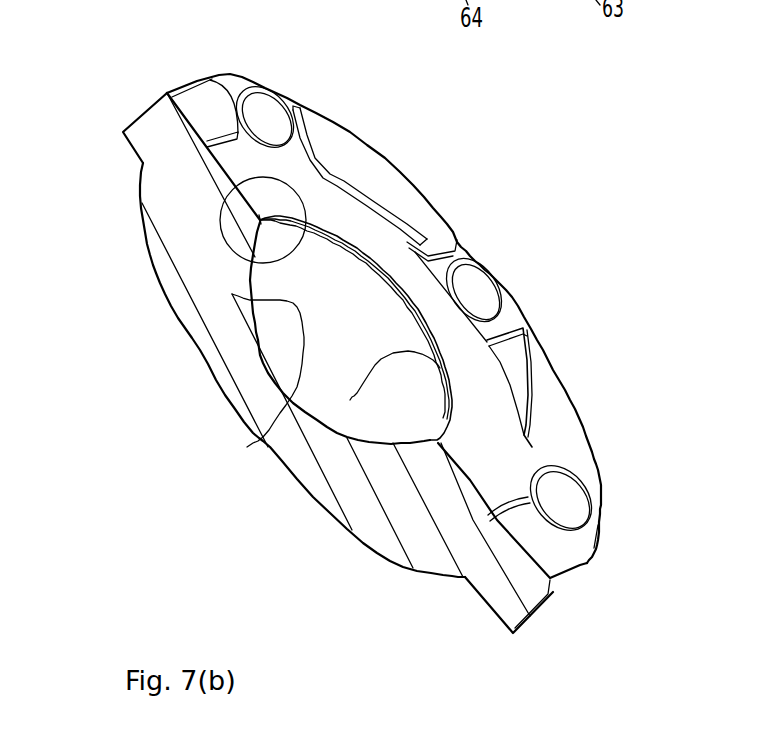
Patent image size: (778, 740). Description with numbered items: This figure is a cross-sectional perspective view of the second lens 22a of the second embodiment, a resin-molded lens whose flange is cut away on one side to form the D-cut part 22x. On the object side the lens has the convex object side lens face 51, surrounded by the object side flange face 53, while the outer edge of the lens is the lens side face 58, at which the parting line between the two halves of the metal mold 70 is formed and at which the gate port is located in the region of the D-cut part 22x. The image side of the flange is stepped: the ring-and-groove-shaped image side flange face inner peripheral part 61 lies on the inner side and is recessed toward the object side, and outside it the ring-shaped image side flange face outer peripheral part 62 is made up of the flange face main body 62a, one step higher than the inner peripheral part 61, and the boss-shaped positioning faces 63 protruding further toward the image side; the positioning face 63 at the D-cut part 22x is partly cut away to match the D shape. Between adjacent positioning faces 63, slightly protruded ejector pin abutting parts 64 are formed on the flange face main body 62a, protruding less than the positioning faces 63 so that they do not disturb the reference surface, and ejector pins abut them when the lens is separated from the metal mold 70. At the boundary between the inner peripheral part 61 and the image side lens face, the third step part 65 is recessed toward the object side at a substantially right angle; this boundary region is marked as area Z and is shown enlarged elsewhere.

The second lens 22a is at (52, 30).
The D-cut part 22x is at (148, 107).
The object side flange face 53 is at (133, 145).
The object side lens face 51 is at (180, 328).
The positioning face 63 is at (192, 103).
The image side flange face inner peripheral part 61 is at (396, 265).
The image side flange face outer peripheral part 62 is at (513, 313).
The flange face main body 62a is at (593, 538).
The ejector pin abutting part 64 is at (267, 110).
The third step part 65 is at (345, 391).
The metal mold 70 is at (249, 427).
The lens side face 58 is at (540, 612).
The area Z is at (210, 248).